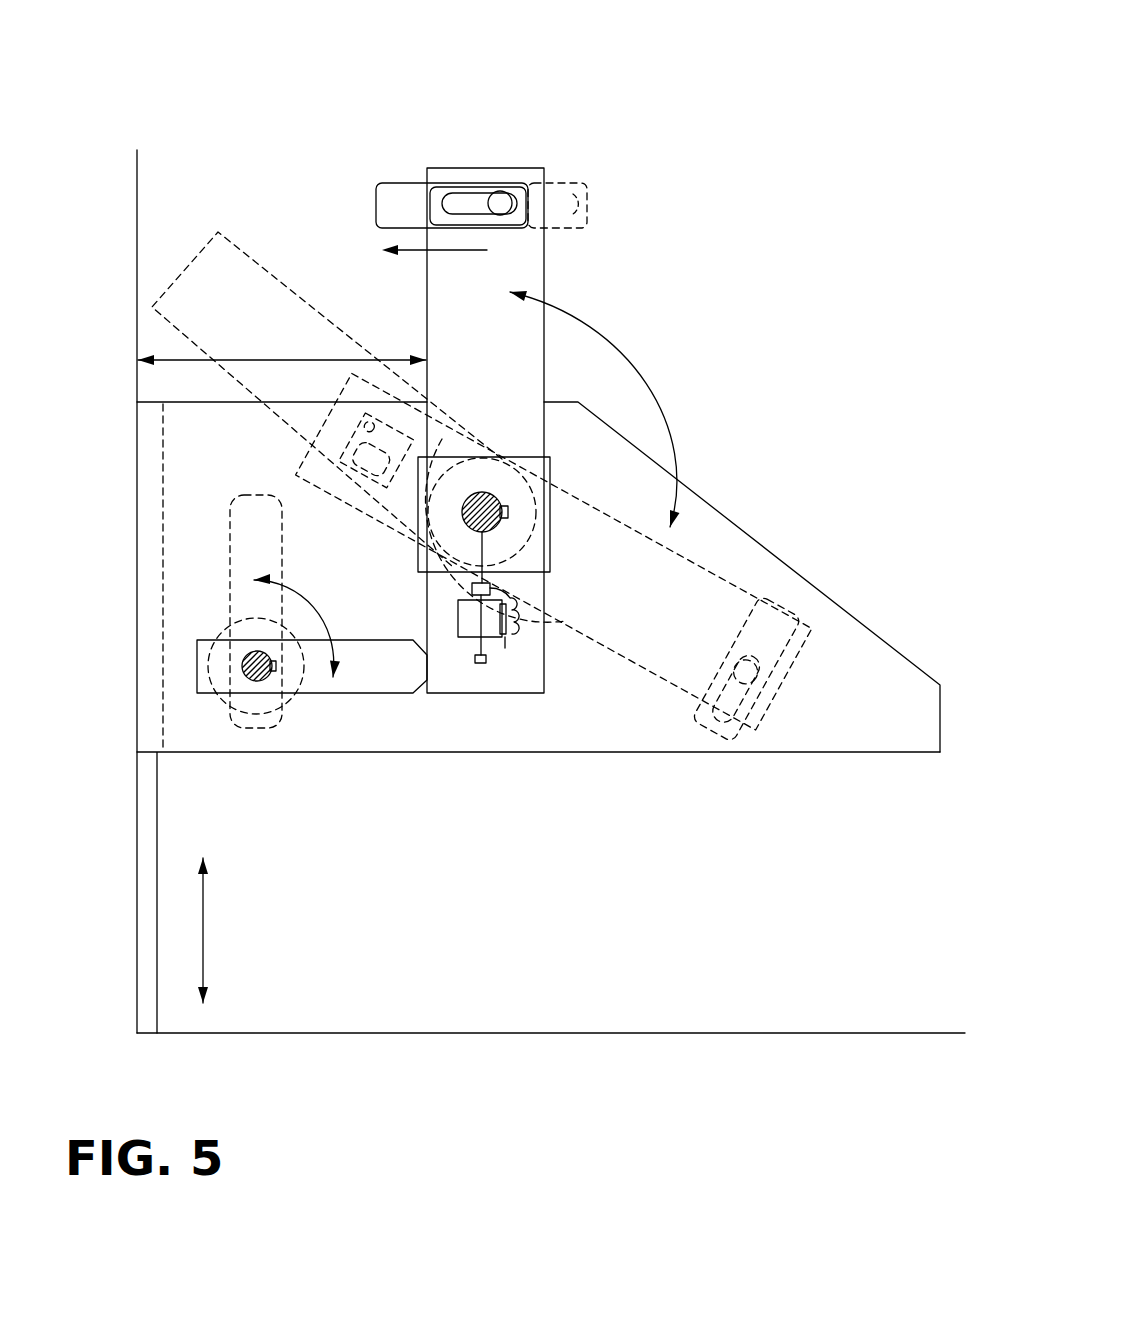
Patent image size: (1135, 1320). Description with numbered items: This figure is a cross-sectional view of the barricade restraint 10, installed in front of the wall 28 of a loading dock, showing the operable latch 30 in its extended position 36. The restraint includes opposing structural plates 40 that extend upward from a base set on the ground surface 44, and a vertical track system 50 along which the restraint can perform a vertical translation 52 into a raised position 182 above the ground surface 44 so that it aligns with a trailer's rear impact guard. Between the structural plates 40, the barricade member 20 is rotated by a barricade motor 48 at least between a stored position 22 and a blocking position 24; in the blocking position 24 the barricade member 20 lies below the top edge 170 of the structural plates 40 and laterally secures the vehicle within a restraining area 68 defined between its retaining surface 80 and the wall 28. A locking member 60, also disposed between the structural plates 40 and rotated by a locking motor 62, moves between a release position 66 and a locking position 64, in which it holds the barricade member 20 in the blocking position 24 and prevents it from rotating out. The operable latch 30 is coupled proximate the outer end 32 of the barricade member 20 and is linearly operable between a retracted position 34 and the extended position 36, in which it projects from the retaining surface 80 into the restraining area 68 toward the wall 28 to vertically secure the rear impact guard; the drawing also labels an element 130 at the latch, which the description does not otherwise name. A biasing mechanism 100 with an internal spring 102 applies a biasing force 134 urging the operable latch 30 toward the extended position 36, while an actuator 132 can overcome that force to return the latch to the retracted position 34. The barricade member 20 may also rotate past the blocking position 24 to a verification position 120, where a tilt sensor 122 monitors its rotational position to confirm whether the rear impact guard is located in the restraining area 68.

The barricade restraint 10 is at (738, 248).
The barricade member 20 is at (544, 270).
The stored position 22 is at (735, 583).
The blocking position 24 is at (495, 140).
The wall 28 is at (138, 152).
The operable latch 30 is at (377, 167).
The outer end 32 is at (437, 167).
The retracted position 34 is at (593, 180).
The extended position 36 is at (352, 195).
The structural plates 40 is at (753, 535).
The ground surface 44 is at (826, 1030).
The barricade motor 48 is at (505, 457).
The vertical track system 50 is at (137, 842).
The vertical translation 52 is at (205, 918).
The locking member 60 is at (215, 706).
The locking motor 62 is at (200, 673).
The locking position 64 is at (380, 700).
The release position 66 is at (225, 602).
The restraining area 68 is at (181, 361).
The retaining surface 80 is at (427, 312).
The biasing mechanism 100 is at (498, 227).
The internal spring 102 is at (458, 203).
The verification position 120 is at (283, 440).
The tilt sensor 122 is at (483, 643).
The slot 130 is at (376, 216).
The actuator 132 is at (508, 162).
The biasing force 134 is at (452, 253).
The top edge 170 is at (217, 402).
The raised position 182 is at (680, 772).